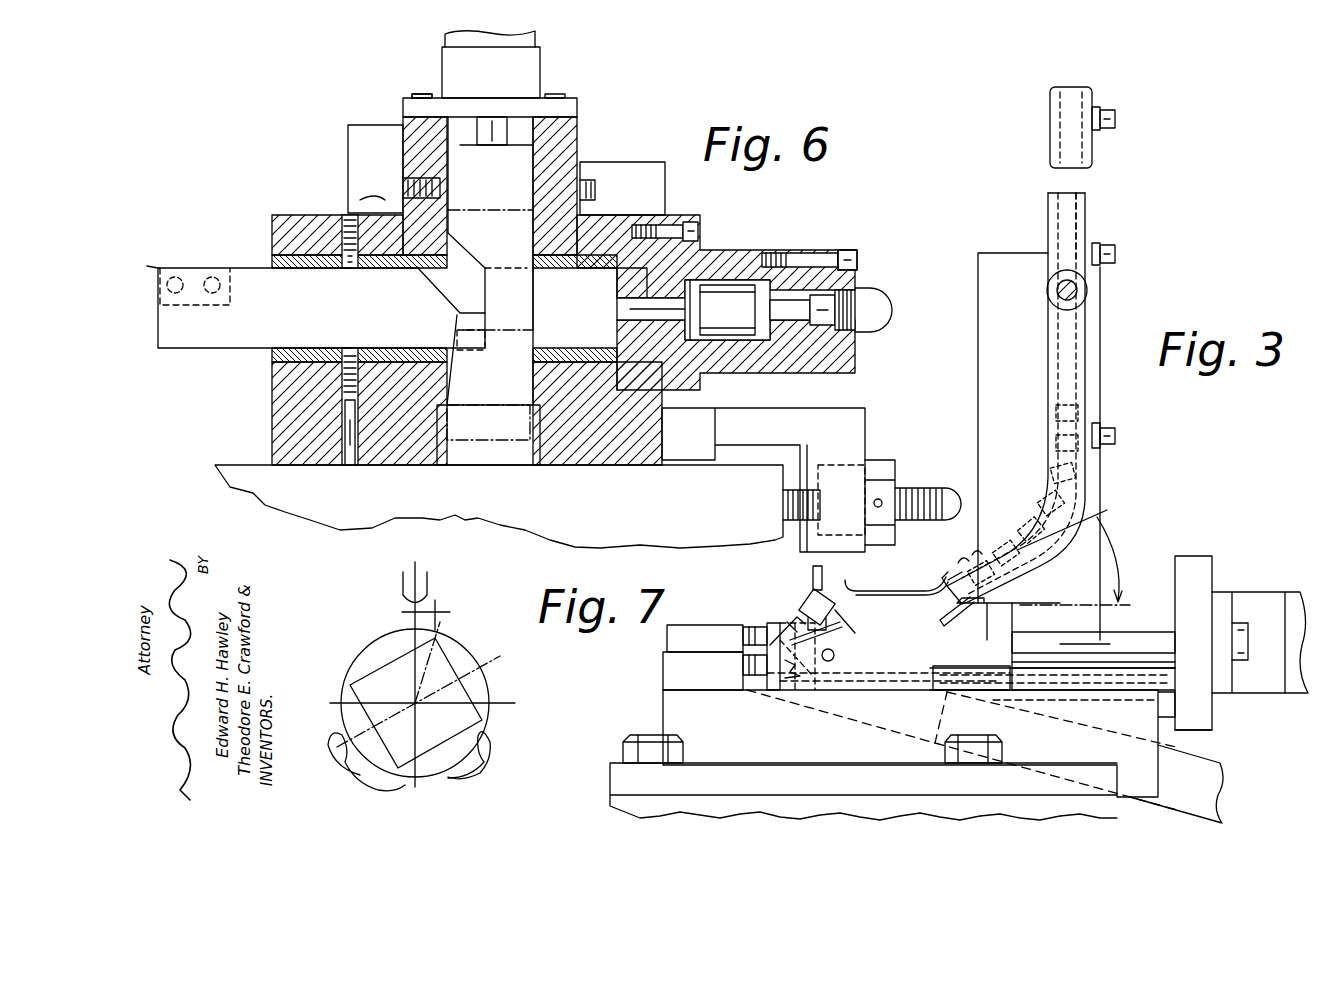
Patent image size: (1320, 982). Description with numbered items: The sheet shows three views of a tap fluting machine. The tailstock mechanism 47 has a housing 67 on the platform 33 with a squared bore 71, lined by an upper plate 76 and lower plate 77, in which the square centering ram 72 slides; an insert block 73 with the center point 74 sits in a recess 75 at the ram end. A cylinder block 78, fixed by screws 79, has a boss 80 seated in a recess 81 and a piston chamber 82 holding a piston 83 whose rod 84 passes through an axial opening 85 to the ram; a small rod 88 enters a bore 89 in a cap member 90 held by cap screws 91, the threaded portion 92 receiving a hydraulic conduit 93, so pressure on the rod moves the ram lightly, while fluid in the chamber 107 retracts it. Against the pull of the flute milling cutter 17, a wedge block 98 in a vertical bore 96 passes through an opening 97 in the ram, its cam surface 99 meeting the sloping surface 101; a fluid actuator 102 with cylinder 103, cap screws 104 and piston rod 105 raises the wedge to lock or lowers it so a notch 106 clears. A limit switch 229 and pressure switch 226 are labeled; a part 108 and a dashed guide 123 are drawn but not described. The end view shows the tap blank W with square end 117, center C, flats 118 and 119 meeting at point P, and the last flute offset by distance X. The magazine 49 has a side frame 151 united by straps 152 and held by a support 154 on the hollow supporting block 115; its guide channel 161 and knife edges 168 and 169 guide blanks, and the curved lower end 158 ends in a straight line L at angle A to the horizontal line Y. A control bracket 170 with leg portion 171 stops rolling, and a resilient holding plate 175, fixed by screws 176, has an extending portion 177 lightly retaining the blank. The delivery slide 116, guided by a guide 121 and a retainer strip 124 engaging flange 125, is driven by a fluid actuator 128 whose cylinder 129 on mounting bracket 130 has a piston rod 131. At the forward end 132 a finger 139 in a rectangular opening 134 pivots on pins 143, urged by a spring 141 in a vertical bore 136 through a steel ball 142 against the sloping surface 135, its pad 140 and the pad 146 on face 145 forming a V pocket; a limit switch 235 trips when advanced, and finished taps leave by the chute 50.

In FIG. 3, the flute milling cutter 17 is at (824, 580).
In FIG. 7, the flute milling cutter 17 is at (428, 580).
In FIG. 6, the platform 33 is at (330, 520).
In FIG. 3, the platform 33 is at (608, 806).
In FIG. 6, the tailstock mechanism 47 is at (823, 216).
In FIG. 3, the tap blank magazine 49 is at (1232, 245).
In FIG. 3, the chute 50 is at (1224, 790).
In FIG. 6, the housing 67 is at (272, 414).
In FIG. 6, the squared bore 71 is at (272, 360).
In FIG. 6, the centering ram 72 is at (215, 340).
In FIG. 6, the insert block 73 is at (205, 265).
In FIG. 6, the center point 74 is at (155, 266).
In FIG. 6, the recess 75 is at (222, 266).
In FIG. 6, the upper plate 76 is at (318, 268).
In FIG. 6, the lower plate 77 is at (322, 348).
In FIG. 6, the cylinder block 78 is at (752, 252).
In FIG. 6, the screws 79 is at (700, 225).
In FIG. 6, the boss 80 is at (650, 276).
In FIG. 6, the recess 81 is at (640, 368).
In FIG. 6, the piston chamber 82 is at (742, 355).
In FIG. 6, the piston 83 is at (735, 295).
In FIG. 6, the rod 84 is at (617, 306).
In FIG. 6, the axial opening 85 is at (645, 322).
In FIG. 6, the rod 88 is at (798, 325).
In FIG. 6, the bore 89 is at (840, 340).
In FIG. 6, the cap member 90 is at (818, 250).
In FIG. 6, the cap screws 91 is at (857, 258).
In FIG. 6, the internal threaded portion 92 is at (857, 292).
In FIG. 6, the hydraulic conduit 93 is at (895, 308).
In FIG. 6, the vertical bore 96 is at (524, 117).
In FIG. 6, the opening 97 is at (533, 316).
In FIG. 6, the wedge block 98 is at (533, 286).
In FIG. 6, the cam surface 99 is at (450, 326).
In FIG. 6, the sloping surface 101 is at (458, 310).
In FIG. 6, the fluid actuator 102 is at (634, 71).
In FIG. 6, the cylinder 103 is at (537, 42).
In FIG. 6, the cap screws 104 is at (428, 94).
In FIG. 6, the piston rod 105 is at (497, 146).
In FIG. 6, the notch 106 is at (466, 258).
In FIG. 6, the chamber 107 is at (712, 325).
In FIG. 6, the coupling pin 108 is at (696, 278).
In FIG. 3, the hollow supporting block 115 is at (663, 710).
In FIG. 3, the tap blank delivery slide 116 is at (1015, 622).
In FIG. 7, the square end 117 is at (484, 720).
In FIG. 7, the flat surface 118 is at (358, 663).
In FIG. 7, the flat surface 119 is at (460, 660).
In FIG. 3, the guide 121 is at (1106, 700).
In FIG. 3, the guide 123 is at (918, 692).
In FIG. 3, the retainer strip 124 is at (992, 669).
In FIG. 3, the flange 125 is at (935, 667).
In FIG. 3, the fluid actuator 128 is at (1292, 562).
In FIG. 3, the cylinder 129 is at (1290, 695).
In FIG. 3, the mounting bracket 130 is at (1212, 722).
In FIG. 3, the piston rod 131 is at (1150, 632).
In FIG. 3, the forward end 132 is at (768, 624).
In FIG. 3, the rectangular opening 134 is at (855, 673).
In FIG. 3, the sloping surface 135 is at (845, 660).
In FIG. 3, the vertical bore 136 is at (800, 660).
In FIG. 3, the finger 139 is at (785, 615).
In FIG. 3, the tap blank engaging pad 140 is at (812, 598).
In FIG. 7, the tap blank engaging pad 140 is at (345, 775).
In FIG. 3, the springs 141 is at (763, 651).
In FIG. 3, the steel balls 142 is at (807, 656).
In FIG. 3, the pins 143 is at (834, 650).
In FIG. 3, the face 145 is at (855, 621).
In FIG. 3, the pad 146 is at (842, 610).
In FIG. 7, the pad 146 is at (490, 768).
In FIG. 3, the side frame 151 is at (1090, 216).
In FIG. 3, the straps 152 is at (1100, 112).
In FIG. 3, the support 154 is at (1020, 262).
In FIG. 3, the lower end 158 is at (996, 594).
In FIG. 3, the guide channel 161 is at (1078, 201).
In FIG. 3, the knife edge 168 is at (1060, 355).
In FIG. 3, the knife edge 169 is at (1068, 312).
In FIG. 3, the angular control bracket 170 is at (984, 608).
In FIG. 3, the leg portion 171 is at (966, 622).
In FIG. 3, the resilient holding plate 175 is at (937, 551).
In FIG. 3, the screws 176 is at (985, 556).
In FIG. 3, the horizontal extending portion 177 is at (907, 586).
In FIG. 6, the pressure switch 226 is at (372, 126).
In FIG. 6, the limit switch 229 is at (630, 164).
In FIG. 3, the limit switch 235 is at (704, 628).
In FIG. 3, the angle A is at (1109, 559).
In FIG. 7, the center C is at (420, 705).
In FIG. 3, the straight line L is at (1108, 514).
In FIG. 7, the straight line L is at (428, 695).
In FIG. 7, the point P is at (438, 640).
In FIG. 7, the tap blank W is at (488, 684).
In FIG. 7, the distance X is at (435, 615).
In FIG. 3, the horizontal line Y is at (1132, 605).
In FIG. 7, the horizontal line Y is at (508, 704).